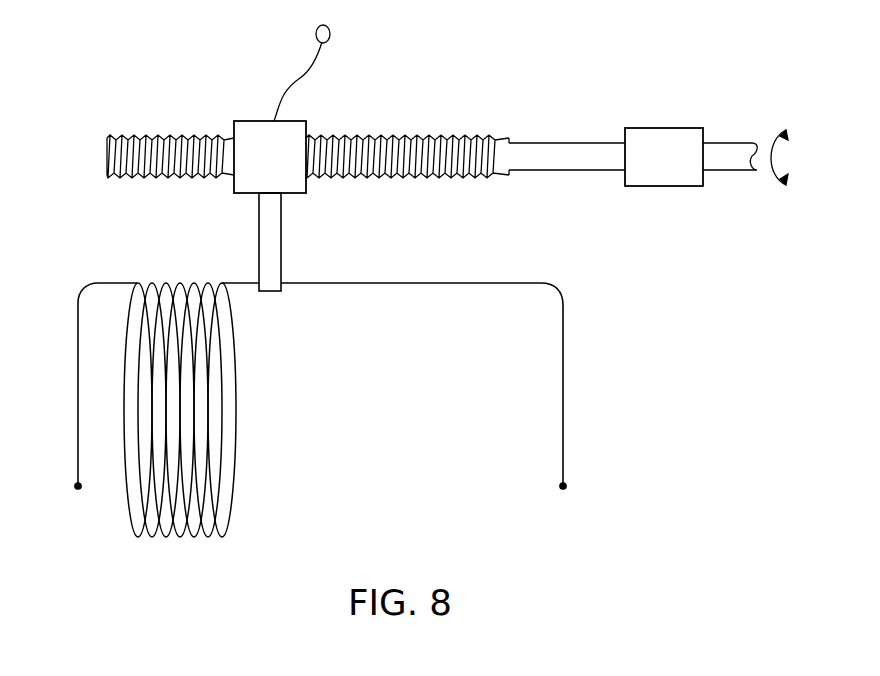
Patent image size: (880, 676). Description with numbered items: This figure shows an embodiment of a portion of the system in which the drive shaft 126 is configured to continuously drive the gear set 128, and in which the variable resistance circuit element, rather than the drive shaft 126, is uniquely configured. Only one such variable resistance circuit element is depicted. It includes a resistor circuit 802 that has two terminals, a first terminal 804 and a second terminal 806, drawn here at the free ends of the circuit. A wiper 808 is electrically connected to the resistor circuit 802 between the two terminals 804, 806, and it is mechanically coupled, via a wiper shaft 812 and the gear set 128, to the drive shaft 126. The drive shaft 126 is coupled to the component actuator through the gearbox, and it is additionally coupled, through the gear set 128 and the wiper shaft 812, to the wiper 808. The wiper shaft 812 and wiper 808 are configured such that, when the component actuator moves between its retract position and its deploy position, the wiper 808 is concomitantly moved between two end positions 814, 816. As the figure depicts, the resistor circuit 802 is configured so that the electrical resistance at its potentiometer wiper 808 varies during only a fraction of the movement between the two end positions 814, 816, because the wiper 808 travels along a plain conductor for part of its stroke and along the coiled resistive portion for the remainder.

The drive shaft 126 is at (730, 142).
The gear set 128 is at (669, 127).
The resistor circuit 802 is at (604, 342).
The first terminal 804 is at (563, 490).
The second terminal 806 is at (78, 490).
The wiper 808 is at (282, 228).
The wiper shaft 812 is at (566, 142).
The end position 814 is at (543, 282).
The end position 816 is at (122, 282).